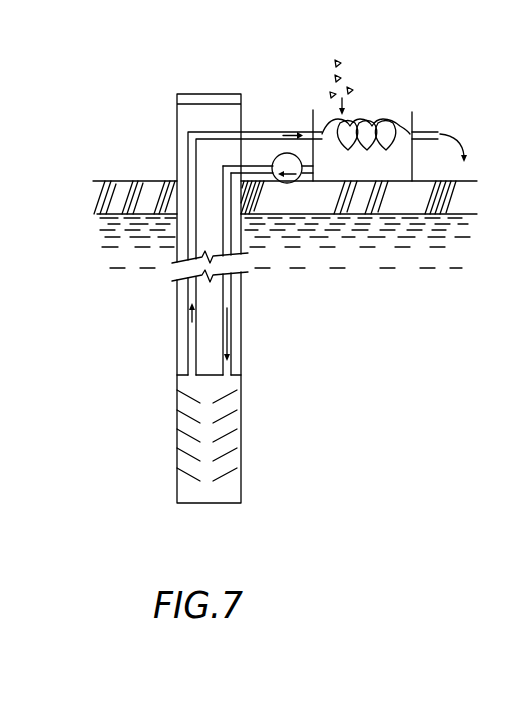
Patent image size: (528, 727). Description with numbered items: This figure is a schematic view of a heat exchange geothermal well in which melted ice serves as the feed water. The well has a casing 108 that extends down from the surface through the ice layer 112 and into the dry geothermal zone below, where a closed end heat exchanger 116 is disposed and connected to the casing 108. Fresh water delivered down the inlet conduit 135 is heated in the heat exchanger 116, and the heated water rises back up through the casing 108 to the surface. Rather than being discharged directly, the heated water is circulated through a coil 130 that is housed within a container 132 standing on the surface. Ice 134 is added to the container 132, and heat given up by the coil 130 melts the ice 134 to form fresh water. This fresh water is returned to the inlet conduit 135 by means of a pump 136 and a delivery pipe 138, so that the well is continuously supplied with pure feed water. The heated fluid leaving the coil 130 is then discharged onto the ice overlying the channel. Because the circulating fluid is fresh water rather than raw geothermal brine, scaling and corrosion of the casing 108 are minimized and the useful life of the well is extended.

The casing 108 is at (241, 358).
The ice layer 112 is at (476, 181).
The closed end heat exchanger 116 is at (241, 440).
The coil 130 is at (393, 120).
The container 132 is at (392, 183).
The ice 134 is at (337, 62).
The inlet conduit 135 is at (232, 287).
The pump 136 is at (291, 183).
The delivery pipe 138 is at (258, 178).